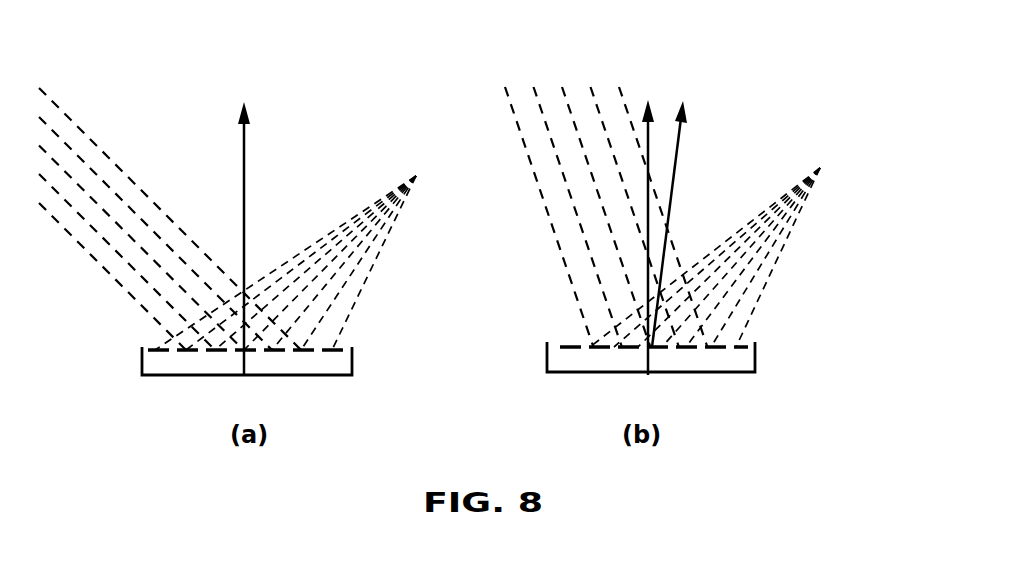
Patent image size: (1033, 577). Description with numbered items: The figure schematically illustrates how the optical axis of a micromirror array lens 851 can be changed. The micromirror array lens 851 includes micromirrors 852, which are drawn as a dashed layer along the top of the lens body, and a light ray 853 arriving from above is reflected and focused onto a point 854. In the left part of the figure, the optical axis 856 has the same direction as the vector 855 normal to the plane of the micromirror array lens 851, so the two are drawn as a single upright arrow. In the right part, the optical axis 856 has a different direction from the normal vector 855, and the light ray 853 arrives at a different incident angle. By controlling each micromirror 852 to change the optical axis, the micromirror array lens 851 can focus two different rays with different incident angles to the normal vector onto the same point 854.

The micromirror array lens 851 is at (560, 374).
The micromirrors 852 is at (593, 346).
The light ray 853 is at (552, 226).
The point 854 is at (417, 176).
The vector normal to the plane of the micromirror array lens 855 is at (243, 142).
The optical axis 856 is at (682, 143).